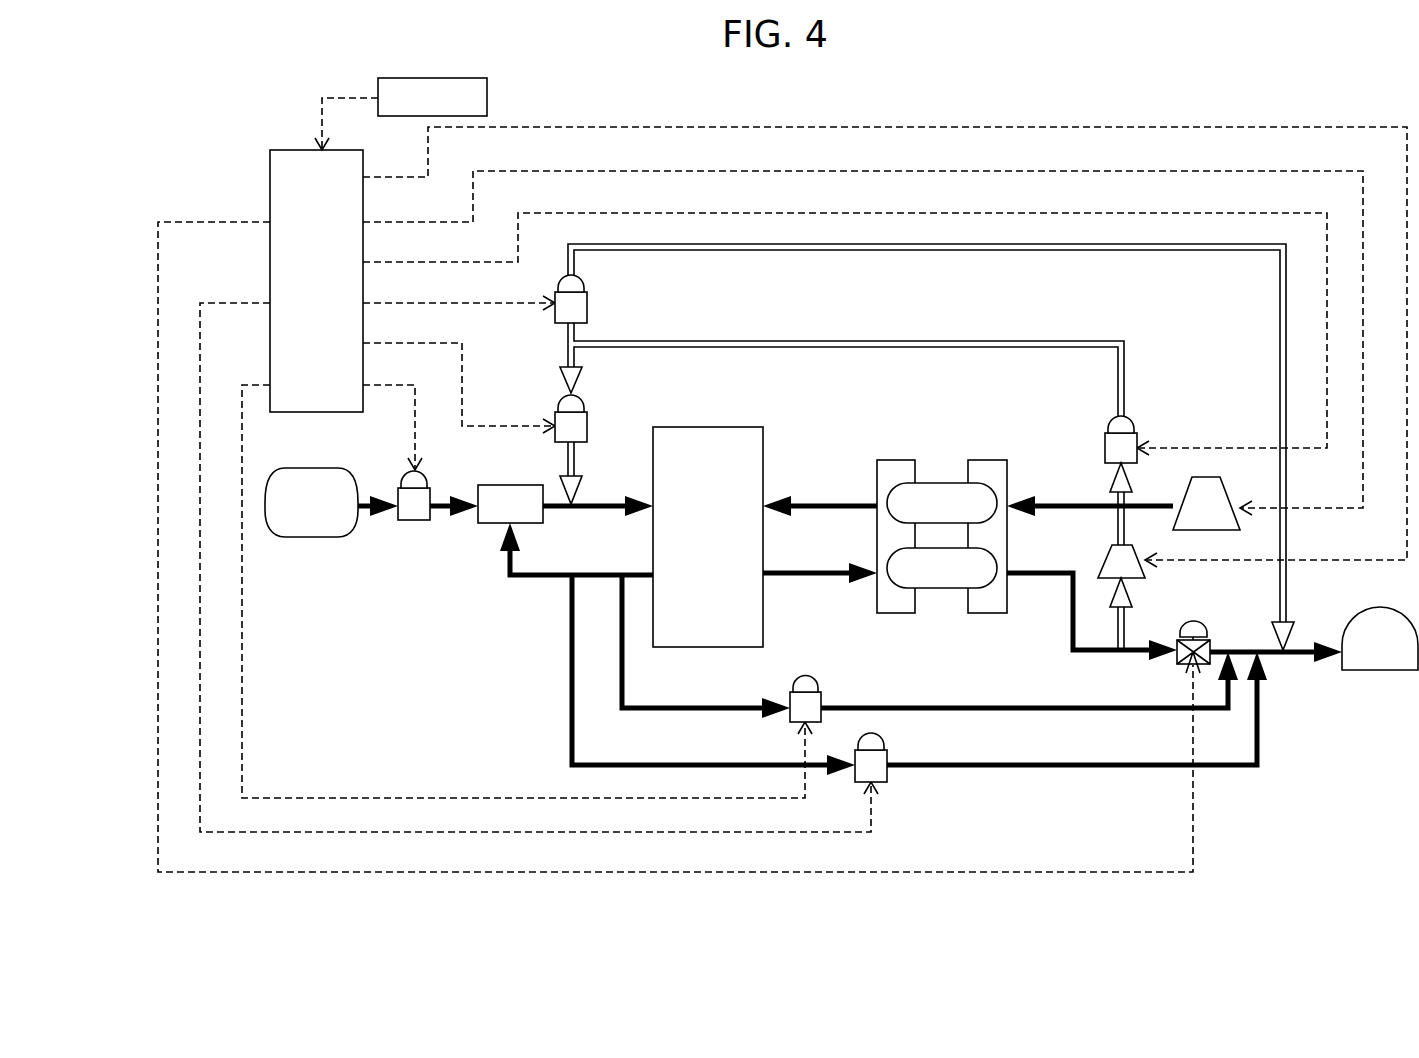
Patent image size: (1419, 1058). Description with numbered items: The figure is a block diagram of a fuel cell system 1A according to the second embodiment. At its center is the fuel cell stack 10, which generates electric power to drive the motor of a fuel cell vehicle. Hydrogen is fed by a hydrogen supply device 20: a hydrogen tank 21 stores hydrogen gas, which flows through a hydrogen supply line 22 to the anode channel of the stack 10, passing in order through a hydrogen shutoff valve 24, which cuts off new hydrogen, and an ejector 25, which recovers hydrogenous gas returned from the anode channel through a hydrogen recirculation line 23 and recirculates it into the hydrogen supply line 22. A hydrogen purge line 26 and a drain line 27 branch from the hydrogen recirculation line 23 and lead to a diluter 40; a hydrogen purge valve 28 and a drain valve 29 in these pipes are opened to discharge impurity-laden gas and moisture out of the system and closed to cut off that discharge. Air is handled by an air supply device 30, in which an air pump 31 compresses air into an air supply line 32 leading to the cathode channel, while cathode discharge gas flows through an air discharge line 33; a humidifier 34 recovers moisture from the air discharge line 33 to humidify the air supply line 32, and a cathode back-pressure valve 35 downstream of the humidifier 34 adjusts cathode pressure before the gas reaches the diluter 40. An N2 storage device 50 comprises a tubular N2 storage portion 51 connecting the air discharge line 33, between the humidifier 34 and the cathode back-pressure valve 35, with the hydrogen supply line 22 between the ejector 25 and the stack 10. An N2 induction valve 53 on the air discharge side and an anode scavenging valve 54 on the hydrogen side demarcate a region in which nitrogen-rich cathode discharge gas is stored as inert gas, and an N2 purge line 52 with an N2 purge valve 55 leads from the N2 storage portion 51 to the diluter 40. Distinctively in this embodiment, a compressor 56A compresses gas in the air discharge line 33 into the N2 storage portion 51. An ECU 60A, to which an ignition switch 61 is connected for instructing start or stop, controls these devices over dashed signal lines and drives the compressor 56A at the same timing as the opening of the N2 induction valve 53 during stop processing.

The fuel cell system 1A is at (1263, 78).
The fuel cell stack 10 is at (735, 427).
The hydrogen supply device 20 is at (380, 606).
The hydrogen tank 21 is at (330, 540).
The hydrogen supply line 22 is at (608, 508).
The hydrogen recirculation line 23 is at (540, 578).
The hydrogen shutoff valve 24 is at (406, 523).
The ejector 25 is at (492, 525).
The hydrogen purge line 26 is at (918, 708).
The drain line 27 is at (960, 768).
The hydrogen purge valve 28 is at (812, 676).
The drain valve 29 is at (887, 787).
The air supply device 30 is at (1205, 392).
The air pump 31 is at (1228, 500).
The air supply line 32 is at (1048, 504).
The air discharge line 33 is at (1056, 577).
The humidifier 34 is at (985, 460).
The cathode back-pressure valve 35 is at (1200, 624).
The diluter 40 is at (1392, 672).
The N2 storage device 50 is at (978, 322).
The N2 storage portion 51 is at (850, 341).
The N2 purge line 52 is at (766, 251).
The N2 induction valve 53 is at (1103, 425).
The anode scavenging valve 54 is at (587, 418).
The N2 purge valve 55 is at (587, 306).
The compressor 56A is at (1102, 565).
The ECU 60A is at (288, 150).
The ignition switch 61 is at (487, 88).